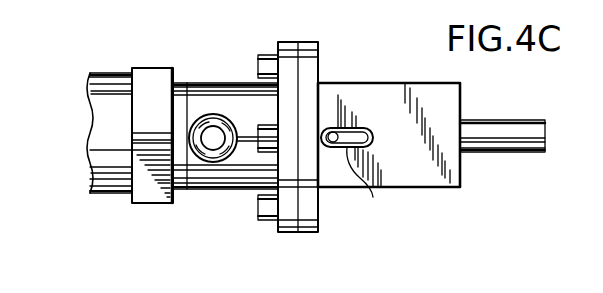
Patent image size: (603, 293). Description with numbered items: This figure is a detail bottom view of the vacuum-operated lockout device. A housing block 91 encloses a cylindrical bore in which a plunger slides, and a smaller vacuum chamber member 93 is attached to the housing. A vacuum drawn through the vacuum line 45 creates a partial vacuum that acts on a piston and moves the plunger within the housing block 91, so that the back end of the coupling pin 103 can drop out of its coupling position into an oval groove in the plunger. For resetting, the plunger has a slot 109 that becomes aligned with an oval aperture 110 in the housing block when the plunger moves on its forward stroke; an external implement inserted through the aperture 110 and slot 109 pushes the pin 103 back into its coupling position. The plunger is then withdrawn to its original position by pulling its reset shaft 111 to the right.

The vacuum line 45 is at (196, 129).
The vacuum chamber member 93 is at (256, 119).
The housing block 91 is at (413, 179).
The pin 103 is at (333, 132).
The slot 109 is at (350, 130).
The oval aperture 110 is at (373, 197).
The reset shaft 111 is at (512, 124).